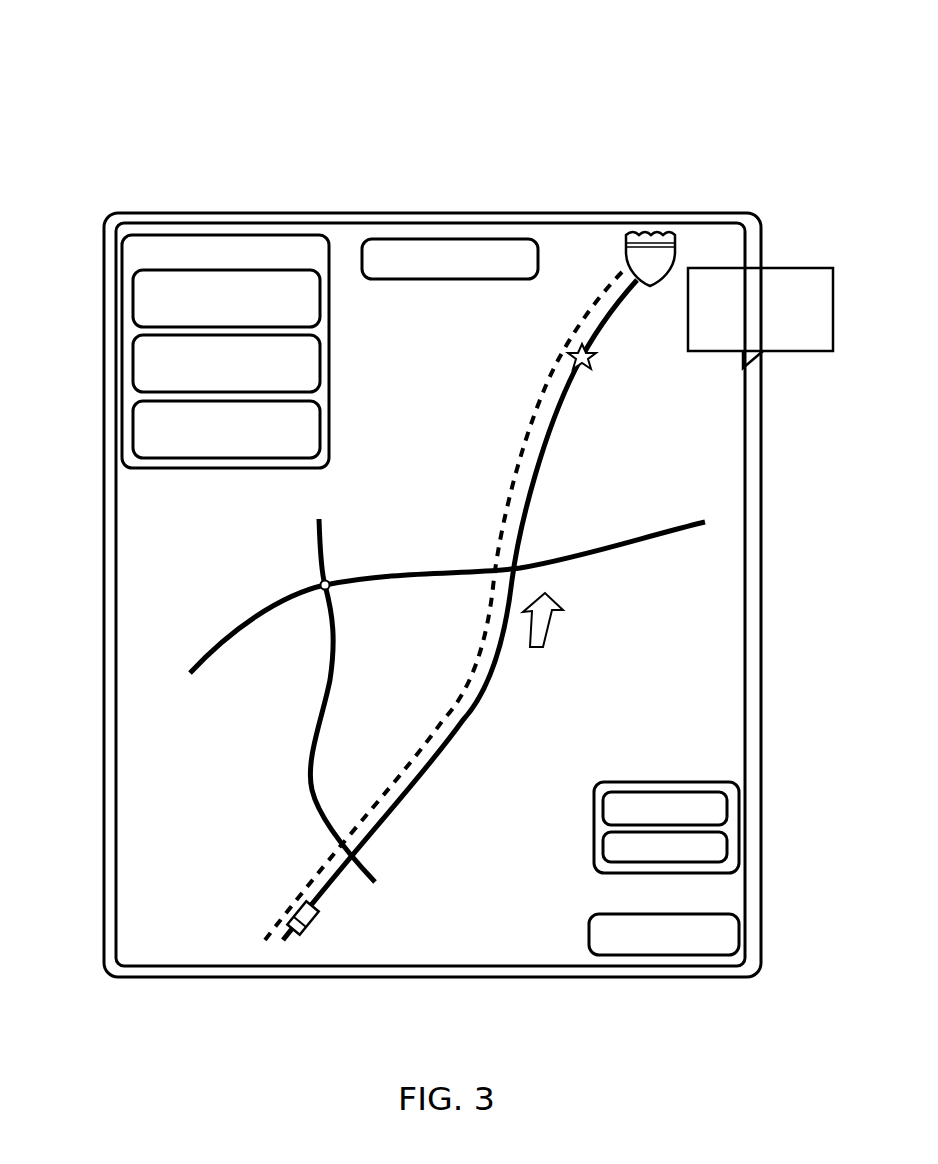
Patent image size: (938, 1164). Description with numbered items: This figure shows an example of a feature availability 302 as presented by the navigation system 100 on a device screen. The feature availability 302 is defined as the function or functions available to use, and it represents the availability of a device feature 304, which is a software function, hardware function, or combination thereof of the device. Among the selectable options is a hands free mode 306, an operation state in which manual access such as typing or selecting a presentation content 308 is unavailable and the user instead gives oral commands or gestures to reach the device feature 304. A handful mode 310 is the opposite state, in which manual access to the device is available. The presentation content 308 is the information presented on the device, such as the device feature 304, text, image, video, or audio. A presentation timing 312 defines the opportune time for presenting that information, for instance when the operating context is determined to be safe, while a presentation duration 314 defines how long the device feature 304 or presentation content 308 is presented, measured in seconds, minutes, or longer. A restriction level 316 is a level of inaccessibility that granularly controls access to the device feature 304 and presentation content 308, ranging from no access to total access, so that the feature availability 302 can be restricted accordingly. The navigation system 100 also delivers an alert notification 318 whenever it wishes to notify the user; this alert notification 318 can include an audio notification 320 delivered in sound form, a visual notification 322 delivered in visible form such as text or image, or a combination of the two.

The navigation system 100 is at (220, 50).
The feature availability 302 is at (247, 235).
The device feature 304 is at (716, 935).
The hands free mode 306 is at (158, 280).
The presentation content 308 is at (657, 263).
The handful mode 310 is at (148, 368).
The presentation timing 312 is at (723, 800).
The presentation duration 314 is at (716, 842).
The restriction level 316 is at (167, 430).
The alert notification 318 is at (548, 590).
The audio notification 320 is at (766, 278).
The visual notification 322 is at (436, 248).